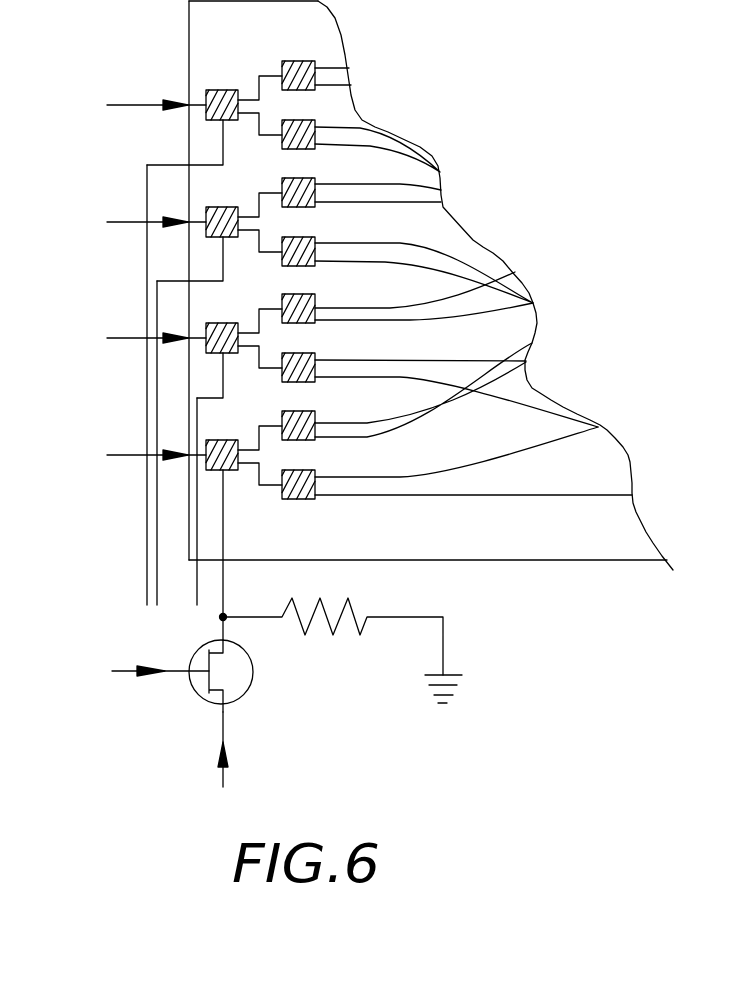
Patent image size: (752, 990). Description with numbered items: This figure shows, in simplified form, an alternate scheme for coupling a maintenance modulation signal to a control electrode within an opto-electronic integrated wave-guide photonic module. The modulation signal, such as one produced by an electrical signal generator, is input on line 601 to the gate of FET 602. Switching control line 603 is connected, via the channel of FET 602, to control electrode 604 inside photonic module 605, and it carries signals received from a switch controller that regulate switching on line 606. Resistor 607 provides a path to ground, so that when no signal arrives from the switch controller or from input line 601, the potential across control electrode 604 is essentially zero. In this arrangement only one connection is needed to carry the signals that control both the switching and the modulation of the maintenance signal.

The input line 601 is at (118, 670).
The FET 602 is at (197, 692).
The switching control line 603 is at (223, 712).
The control electrode 604 is at (235, 470).
The photonic module 605 is at (538, 543).
The line 606 is at (107, 455).
The resistor 607 is at (335, 630).